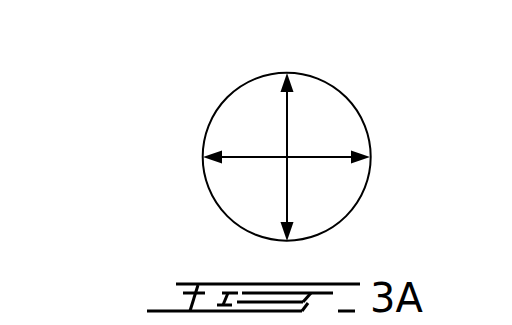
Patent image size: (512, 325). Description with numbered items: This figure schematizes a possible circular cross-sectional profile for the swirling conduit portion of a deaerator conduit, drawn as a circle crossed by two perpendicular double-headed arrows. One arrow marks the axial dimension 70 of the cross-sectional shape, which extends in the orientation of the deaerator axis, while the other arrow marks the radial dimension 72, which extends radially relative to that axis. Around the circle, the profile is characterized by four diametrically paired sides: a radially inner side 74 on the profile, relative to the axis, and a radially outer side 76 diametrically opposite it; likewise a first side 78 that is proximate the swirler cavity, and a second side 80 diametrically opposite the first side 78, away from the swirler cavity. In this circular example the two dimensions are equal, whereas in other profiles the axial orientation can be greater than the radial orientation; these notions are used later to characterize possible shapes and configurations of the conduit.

The axial dimension 70 is at (317, 158).
The radial dimension 72 is at (287, 122).
The radially inner side 74 is at (287, 241).
The radially outer side 76 is at (287, 73).
The first side 78 is at (370, 157).
The second side 80 is at (203, 157).